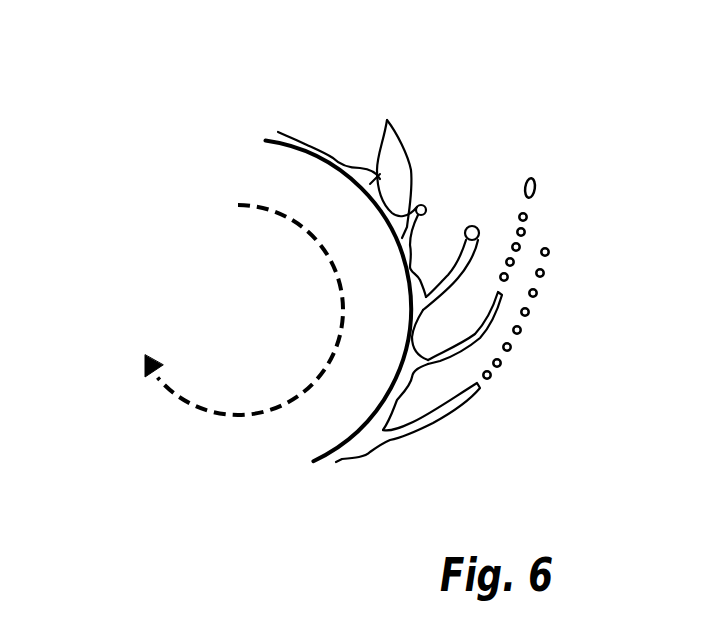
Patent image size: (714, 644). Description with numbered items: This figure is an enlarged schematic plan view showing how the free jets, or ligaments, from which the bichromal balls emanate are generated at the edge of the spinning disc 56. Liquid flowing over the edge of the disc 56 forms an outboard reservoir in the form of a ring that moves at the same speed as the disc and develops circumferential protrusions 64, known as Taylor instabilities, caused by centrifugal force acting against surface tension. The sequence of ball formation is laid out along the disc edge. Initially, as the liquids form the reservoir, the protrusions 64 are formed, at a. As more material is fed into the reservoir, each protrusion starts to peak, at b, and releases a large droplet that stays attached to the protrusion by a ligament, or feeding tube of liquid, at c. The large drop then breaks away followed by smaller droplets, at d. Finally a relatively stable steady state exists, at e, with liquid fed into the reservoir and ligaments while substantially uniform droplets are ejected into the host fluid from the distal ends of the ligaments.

The disc 56 is at (266, 141).
The circumferential protrusion 64 is at (387, 120).
The protrusion formation stage a is at (329, 172).
The protrusion peaking stage b is at (398, 251).
The droplet-and-ligament stage c is at (432, 293).
The drop break-away stage d is at (441, 361).
The steady state ejection stage e is at (408, 422).